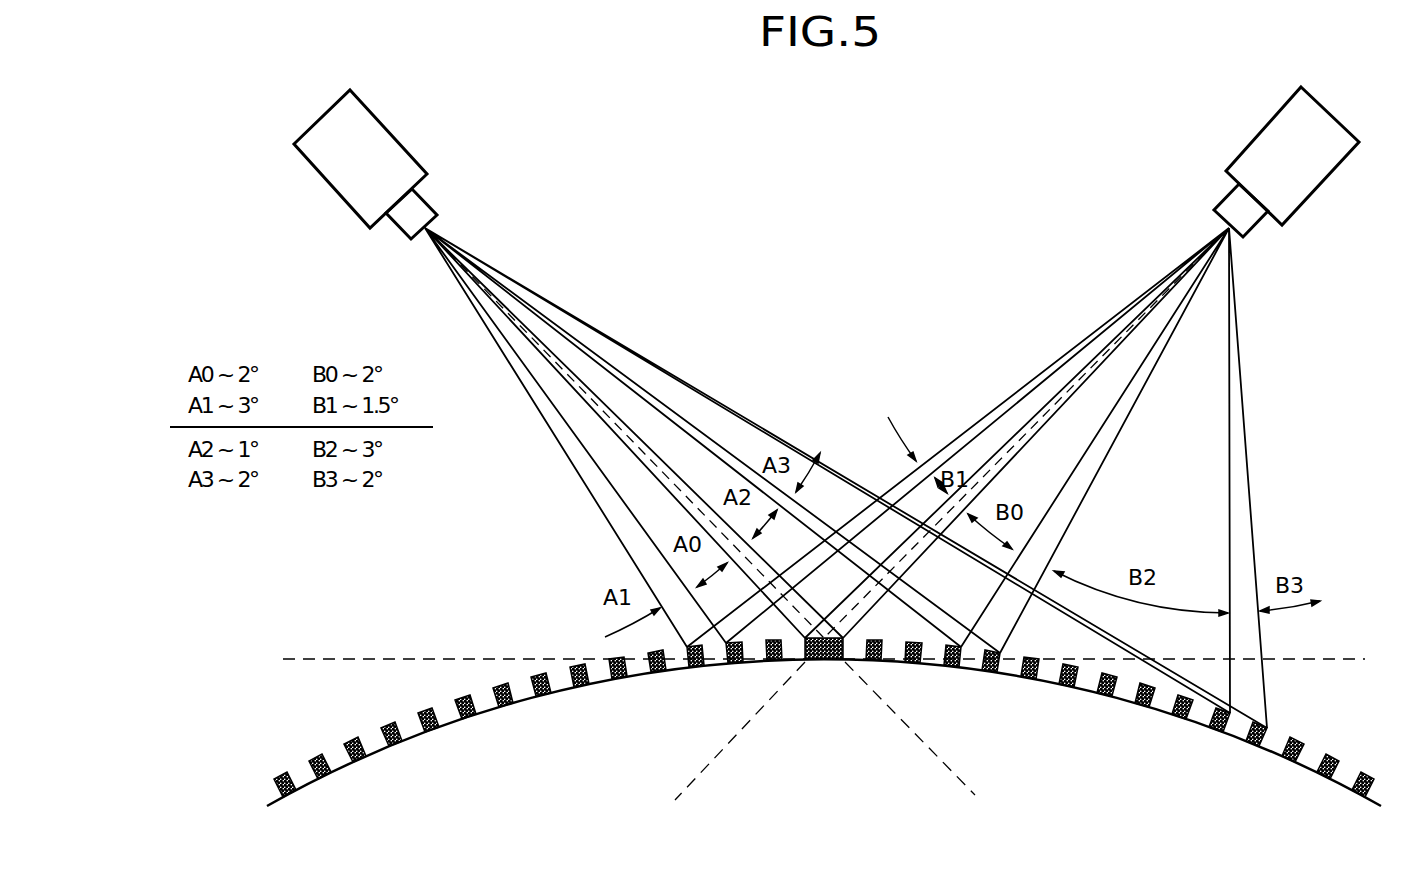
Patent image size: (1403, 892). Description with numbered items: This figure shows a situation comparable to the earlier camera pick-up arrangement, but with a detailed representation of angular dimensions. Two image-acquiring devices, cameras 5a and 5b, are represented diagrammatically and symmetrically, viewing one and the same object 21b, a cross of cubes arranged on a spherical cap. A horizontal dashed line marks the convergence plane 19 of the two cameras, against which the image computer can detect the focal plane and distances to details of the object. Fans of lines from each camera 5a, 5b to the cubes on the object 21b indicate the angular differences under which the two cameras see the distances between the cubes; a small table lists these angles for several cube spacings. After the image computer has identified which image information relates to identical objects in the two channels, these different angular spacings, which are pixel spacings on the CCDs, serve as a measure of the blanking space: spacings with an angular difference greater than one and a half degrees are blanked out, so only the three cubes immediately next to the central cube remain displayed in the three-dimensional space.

The image-acquiring device 5a is at (413, 159).
The image-acquiring device 5b is at (1248, 146).
The convergence plane 19 is at (348, 659).
The object 21b is at (1096, 776).